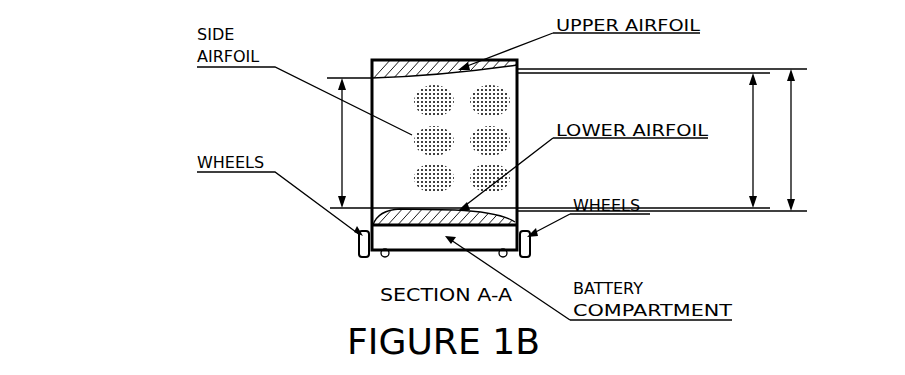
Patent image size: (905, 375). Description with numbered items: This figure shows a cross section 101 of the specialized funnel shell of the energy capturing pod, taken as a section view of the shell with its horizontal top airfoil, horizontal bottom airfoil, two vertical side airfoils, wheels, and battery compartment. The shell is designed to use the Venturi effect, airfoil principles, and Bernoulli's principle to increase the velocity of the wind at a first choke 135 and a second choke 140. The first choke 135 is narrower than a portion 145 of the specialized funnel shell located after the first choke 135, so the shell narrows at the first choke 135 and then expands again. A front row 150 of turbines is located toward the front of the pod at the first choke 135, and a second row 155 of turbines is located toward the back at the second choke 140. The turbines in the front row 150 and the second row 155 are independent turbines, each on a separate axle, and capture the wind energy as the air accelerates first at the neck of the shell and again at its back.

The cross section 101 is at (452, 48).
The front row of turbines 150 is at (432, 92).
The second row of turbines 155 is at (508, 135).
The first choke 135 is at (347, 143).
The portion of the specialized funnel shell 145 is at (643, 140).
The second choke 140 is at (662, 140).